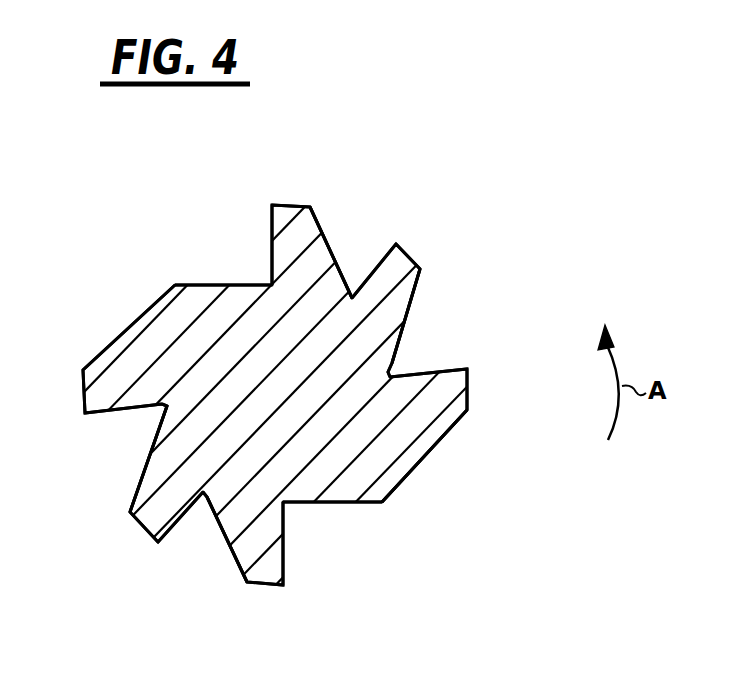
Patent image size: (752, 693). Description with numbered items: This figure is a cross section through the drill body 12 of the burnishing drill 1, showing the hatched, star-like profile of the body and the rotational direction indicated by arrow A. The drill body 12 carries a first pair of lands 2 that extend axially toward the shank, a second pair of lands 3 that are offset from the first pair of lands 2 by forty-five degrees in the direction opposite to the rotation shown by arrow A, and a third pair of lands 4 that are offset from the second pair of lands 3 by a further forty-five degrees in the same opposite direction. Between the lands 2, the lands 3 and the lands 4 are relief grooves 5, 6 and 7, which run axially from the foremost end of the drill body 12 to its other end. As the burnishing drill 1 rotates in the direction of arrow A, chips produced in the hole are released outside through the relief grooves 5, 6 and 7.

The burnishing drill 1 is at (134, 276).
The first pair of lands 2 is at (293, 205).
The second pair of lands 3 is at (404, 249).
The third pair of lands 4 is at (83, 386).
The relief groove 5 is at (330, 249).
The relief groove 6 is at (392, 360).
The relief groove 7 is at (240, 285).
The drill body 12 is at (405, 478).